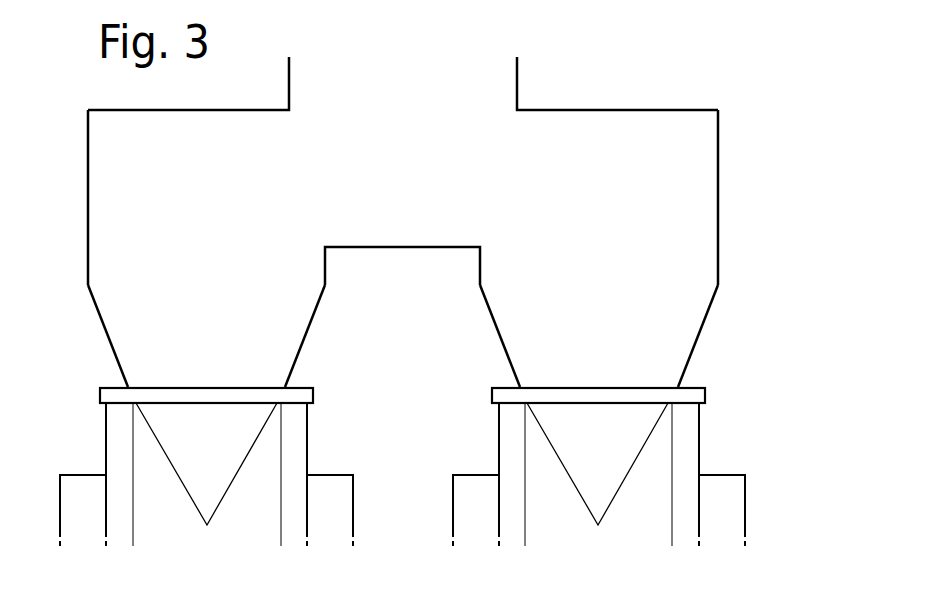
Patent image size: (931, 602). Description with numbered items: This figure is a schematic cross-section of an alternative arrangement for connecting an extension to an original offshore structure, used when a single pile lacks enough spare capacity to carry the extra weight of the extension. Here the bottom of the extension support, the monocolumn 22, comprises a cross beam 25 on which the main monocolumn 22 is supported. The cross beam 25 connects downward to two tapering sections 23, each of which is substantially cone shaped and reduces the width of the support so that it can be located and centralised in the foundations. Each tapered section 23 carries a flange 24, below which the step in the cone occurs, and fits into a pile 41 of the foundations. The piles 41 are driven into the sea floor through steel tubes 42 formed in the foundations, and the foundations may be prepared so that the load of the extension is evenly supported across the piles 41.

The monocolumn 22 is at (517, 77).
The cross beam 25 is at (694, 170).
The tapered section 23 is at (680, 323).
The flange 24 is at (702, 396).
The pile 41 is at (693, 435).
The steel tube 42 is at (730, 508).